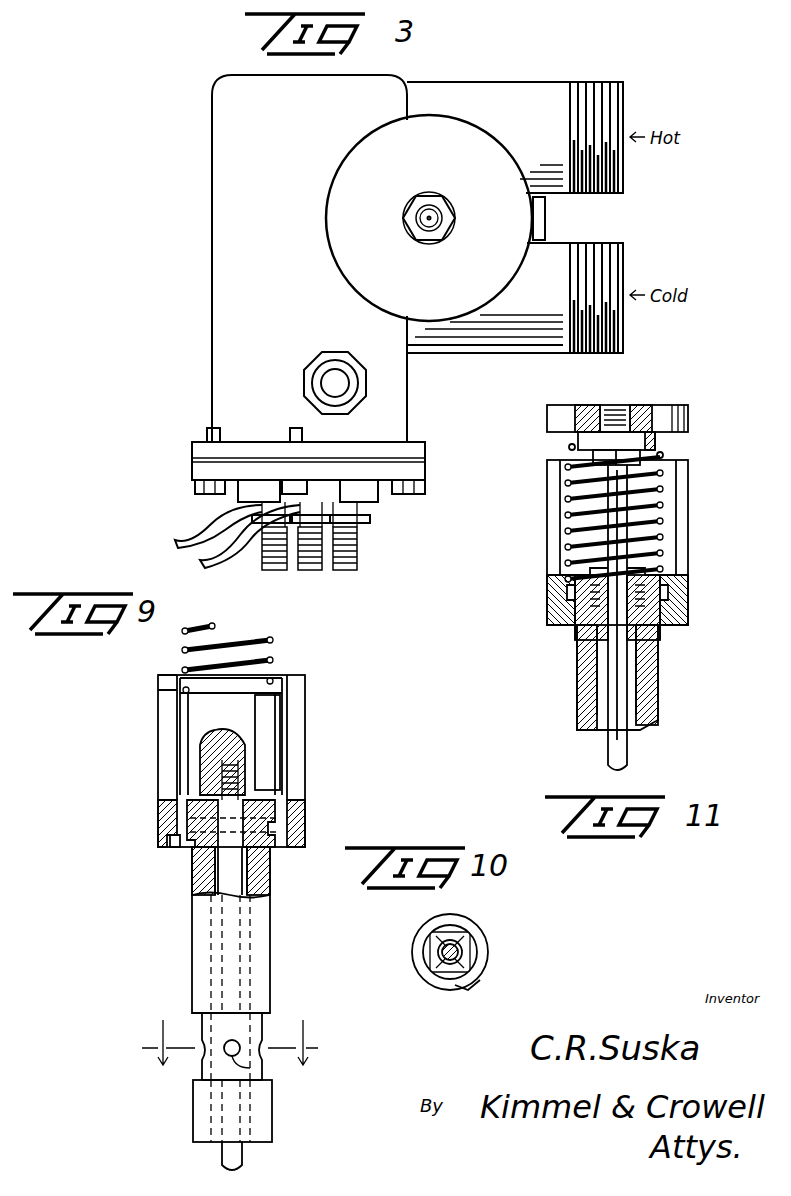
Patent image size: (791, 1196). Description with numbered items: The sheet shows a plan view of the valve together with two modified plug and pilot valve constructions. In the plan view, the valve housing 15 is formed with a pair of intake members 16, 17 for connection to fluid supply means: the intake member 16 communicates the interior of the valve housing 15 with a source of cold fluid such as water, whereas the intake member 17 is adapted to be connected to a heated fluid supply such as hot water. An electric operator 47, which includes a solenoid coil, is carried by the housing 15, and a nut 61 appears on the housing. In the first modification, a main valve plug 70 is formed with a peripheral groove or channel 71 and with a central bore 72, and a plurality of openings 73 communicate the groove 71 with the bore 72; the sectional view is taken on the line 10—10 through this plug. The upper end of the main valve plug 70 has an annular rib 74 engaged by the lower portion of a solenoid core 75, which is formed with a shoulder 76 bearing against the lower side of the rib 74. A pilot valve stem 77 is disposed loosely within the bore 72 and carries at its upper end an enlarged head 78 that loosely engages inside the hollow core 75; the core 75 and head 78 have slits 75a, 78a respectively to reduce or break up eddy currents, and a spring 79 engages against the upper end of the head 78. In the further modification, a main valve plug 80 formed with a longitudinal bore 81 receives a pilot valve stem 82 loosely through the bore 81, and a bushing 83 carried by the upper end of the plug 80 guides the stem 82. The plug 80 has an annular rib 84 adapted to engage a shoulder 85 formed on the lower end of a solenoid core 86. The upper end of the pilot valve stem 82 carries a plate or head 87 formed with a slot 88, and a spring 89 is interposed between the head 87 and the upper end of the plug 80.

In FIG. 3, the valve housing 15 is at (233, 355).
In FIG. 3, the electric operator 47 is at (333, 272).
In FIG. 3, the intake member 17 is at (526, 82).
In FIG. 3, the intake member 16 is at (497, 355).
In FIG. 3, the nut 61 is at (352, 404).
In FIG. 11, the plate or head 87 is at (690, 420).
In FIG. 11, the slot 88 is at (572, 416).
In FIG. 11, the spring 89 is at (650, 463).
In FIG. 11, the solenoid core 86 is at (547, 545).
In FIG. 11, the pilot valve stem 82 is at (640, 540).
In FIG. 11, the bushing 83 is at (640, 580).
In FIG. 11, the shoulder 85 is at (660, 606).
In FIG. 11, the annular rib 84 is at (560, 603).
In FIG. 11, the main valve plug 80 is at (660, 680).
In FIG. 11, the longitudinal bore 81 is at (590, 660).
In FIG. 9, the spring 79 is at (273, 655).
In FIG. 9, the solenoid core 75 is at (160, 786).
In FIG. 9, the slits 75a is at (168, 750).
In FIG. 9, the enlarged head 78 is at (270, 718).
In FIG. 9, the slits 78a is at (326, 752).
In FIG. 9, the annular rib 74 is at (160, 822).
In FIG. 9, the shoulder 76 is at (172, 847).
In FIG. 9, the central bore 72 is at (215, 880).
In FIG. 9, the pilot valve stem 77 is at (235, 875).
In FIG. 10, the pilot valve stem 77 is at (462, 945).
In FIG. 9, the main valve plug 70 is at (281, 944).
In FIG. 10, the main valve plug 70 is at (405, 955).
In FIG. 9, the openings 73 is at (262, 1050).
In FIG. 10, the openings 73 is at (470, 988).
In FIG. 9, the peripheral groove or channel 71 is at (200, 1078).
In FIG. 10, the peripheral groove or channel 71 is at (422, 970).
In FIG. 9, the section line 10 is at (230, 1029).